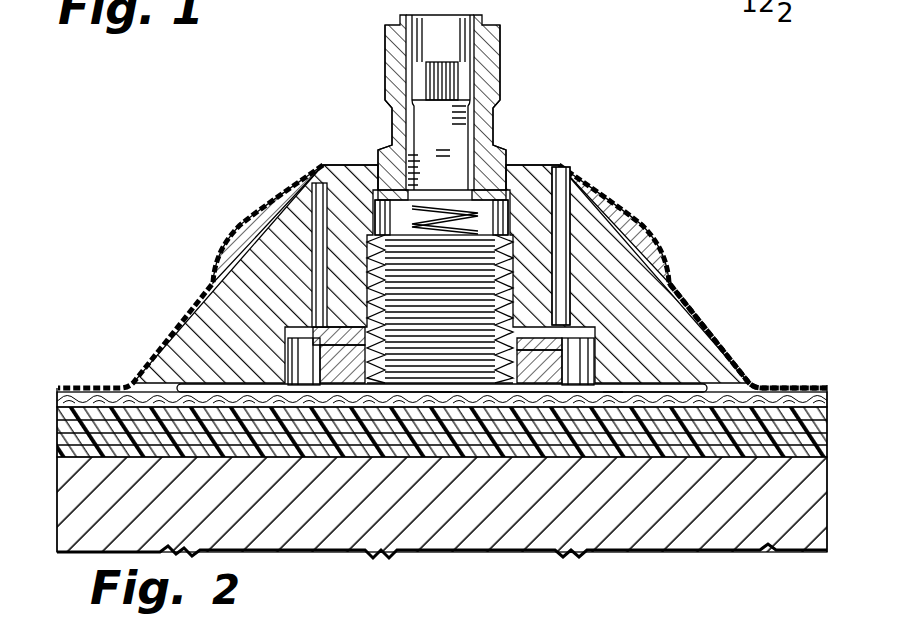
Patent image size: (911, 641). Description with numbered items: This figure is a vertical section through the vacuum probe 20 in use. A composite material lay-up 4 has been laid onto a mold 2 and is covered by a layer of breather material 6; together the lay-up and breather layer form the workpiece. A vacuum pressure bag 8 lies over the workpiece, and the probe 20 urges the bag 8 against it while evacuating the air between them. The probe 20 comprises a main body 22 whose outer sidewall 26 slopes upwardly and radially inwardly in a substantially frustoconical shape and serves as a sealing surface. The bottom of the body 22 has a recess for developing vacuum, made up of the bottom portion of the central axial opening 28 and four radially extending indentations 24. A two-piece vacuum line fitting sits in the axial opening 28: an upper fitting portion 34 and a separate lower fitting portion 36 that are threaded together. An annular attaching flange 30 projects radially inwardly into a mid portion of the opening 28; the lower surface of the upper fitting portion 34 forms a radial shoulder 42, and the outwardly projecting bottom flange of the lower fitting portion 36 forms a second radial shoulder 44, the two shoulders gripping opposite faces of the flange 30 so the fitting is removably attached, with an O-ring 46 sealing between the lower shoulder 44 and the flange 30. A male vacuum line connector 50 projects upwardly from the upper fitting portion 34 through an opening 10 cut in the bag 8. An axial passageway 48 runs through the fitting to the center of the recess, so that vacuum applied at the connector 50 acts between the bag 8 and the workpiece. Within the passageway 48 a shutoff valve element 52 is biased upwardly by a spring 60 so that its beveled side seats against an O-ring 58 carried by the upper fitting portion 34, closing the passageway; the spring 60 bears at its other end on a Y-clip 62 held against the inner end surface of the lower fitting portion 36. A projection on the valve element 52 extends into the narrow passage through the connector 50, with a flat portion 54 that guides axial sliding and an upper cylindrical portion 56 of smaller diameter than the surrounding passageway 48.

The mold 2 is at (698, 540).
The composite material lay-up 4 is at (57, 468).
The layer of breather material 6 is at (780, 398).
The vacuum pressure bag 8 is at (728, 358).
The opening 10 is at (510, 165).
The probe 20 is at (380, 117).
The main body 22 is at (670, 320).
The radially extending indentations 24 is at (441, 393).
The outer sidewall 26 is at (640, 230).
The central axial opening 28 is at (572, 184).
The annular attaching flange 30 is at (568, 316).
The upper fitting portion 34 is at (320, 172).
The lower fitting portion 36 is at (333, 347).
The radial shoulder 42 is at (298, 332).
The second radial shoulder 44 is at (325, 345).
The O-ring 46 is at (356, 348).
The axial passageway 48 is at (455, 22).
The male vacuum line connector 50 is at (496, 71).
The shutoff valve element 52 is at (408, 185).
The flat portion 54 is at (455, 143).
The cylindrical portion 56 is at (432, 64).
The O-ring 58 is at (487, 190).
The spring 60 is at (518, 217).
The Y-clip 62 is at (520, 240).